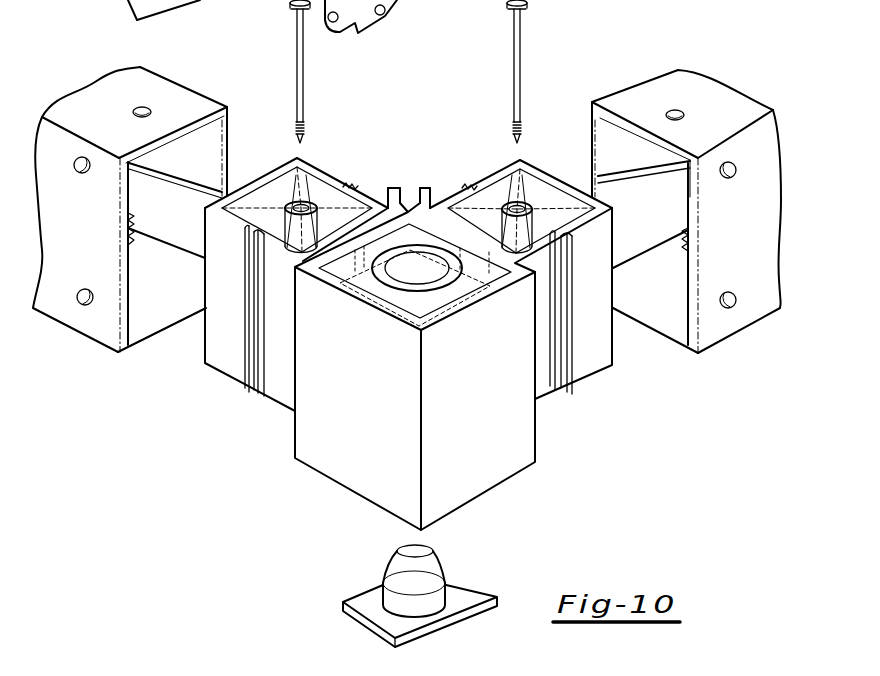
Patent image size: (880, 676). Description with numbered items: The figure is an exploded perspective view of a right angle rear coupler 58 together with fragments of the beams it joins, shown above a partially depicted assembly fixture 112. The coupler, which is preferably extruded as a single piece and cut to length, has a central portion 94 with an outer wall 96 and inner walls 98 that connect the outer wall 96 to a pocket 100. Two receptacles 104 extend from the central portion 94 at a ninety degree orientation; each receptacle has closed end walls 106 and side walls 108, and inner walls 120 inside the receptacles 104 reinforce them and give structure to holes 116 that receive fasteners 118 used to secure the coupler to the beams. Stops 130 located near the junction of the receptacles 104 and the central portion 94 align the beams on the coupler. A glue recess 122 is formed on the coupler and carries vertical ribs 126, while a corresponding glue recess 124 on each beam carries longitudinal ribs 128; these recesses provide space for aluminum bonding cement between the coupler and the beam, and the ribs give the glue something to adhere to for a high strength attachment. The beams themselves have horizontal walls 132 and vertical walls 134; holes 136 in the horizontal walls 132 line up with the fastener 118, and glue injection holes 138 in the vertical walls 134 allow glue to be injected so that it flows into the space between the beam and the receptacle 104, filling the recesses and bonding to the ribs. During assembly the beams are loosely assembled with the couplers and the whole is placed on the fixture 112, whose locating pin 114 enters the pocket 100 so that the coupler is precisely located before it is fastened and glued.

The rear coupler 58 is at (200, 401).
The central portion 94 is at (501, 296).
The outer wall 96 is at (438, 320).
The inner walls 98 is at (378, 306).
The pocket 100 is at (398, 268).
The receptacles 104 is at (280, 170).
The closed end walls 106 is at (250, 197).
The side walls 108 is at (213, 258).
The fixture 112 is at (465, 586).
The locating pin 114 is at (398, 598).
The holes 116 is at (305, 210).
The fasteners 118 is at (306, 134).
The inner walls 120 is at (525, 200).
The glue recess 122 is at (578, 388).
The glue recess 124 is at (186, 172).
The vertical ribs 126 is at (567, 391).
The longitudinal ribs 128 is at (202, 175).
The stops 130 is at (426, 187).
The horizontal walls 132 is at (148, 306).
The vertical walls 134 is at (75, 318).
The holes 136 is at (140, 107).
The glue injection holes 138 is at (88, 162).